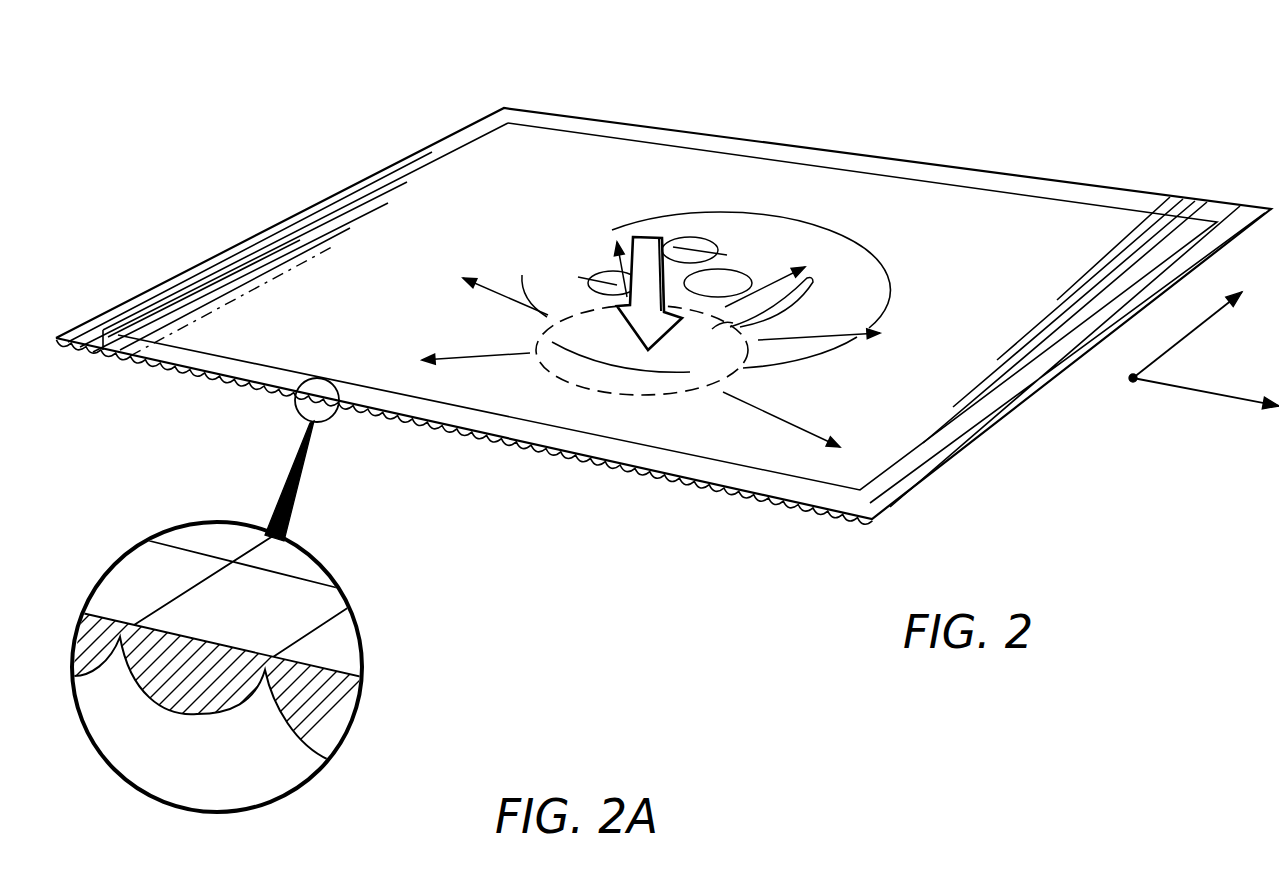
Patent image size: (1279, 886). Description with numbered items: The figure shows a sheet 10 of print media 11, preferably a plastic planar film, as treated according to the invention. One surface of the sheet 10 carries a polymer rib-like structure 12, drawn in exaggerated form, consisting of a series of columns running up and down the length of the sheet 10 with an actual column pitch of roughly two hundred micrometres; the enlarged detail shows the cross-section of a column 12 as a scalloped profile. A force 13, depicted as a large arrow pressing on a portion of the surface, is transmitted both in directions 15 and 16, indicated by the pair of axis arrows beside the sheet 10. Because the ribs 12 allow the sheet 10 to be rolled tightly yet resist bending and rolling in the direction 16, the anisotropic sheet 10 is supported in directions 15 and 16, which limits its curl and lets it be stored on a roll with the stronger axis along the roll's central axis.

In FIG. 2, the sheet 10 is at (1137, 140).
In FIG. 2, the print media 11 is at (310, 208).
In FIG. 2, the rib-like structure 12 is at (507, 443).
In FIG. 2A, the rib-like structure 12 is at (197, 714).
In FIG. 2, the force 13 is at (647, 258).
In FIG. 2, the direction 15 is at (1204, 404).
In FIG. 2, the direction 16 is at (1187, 335).